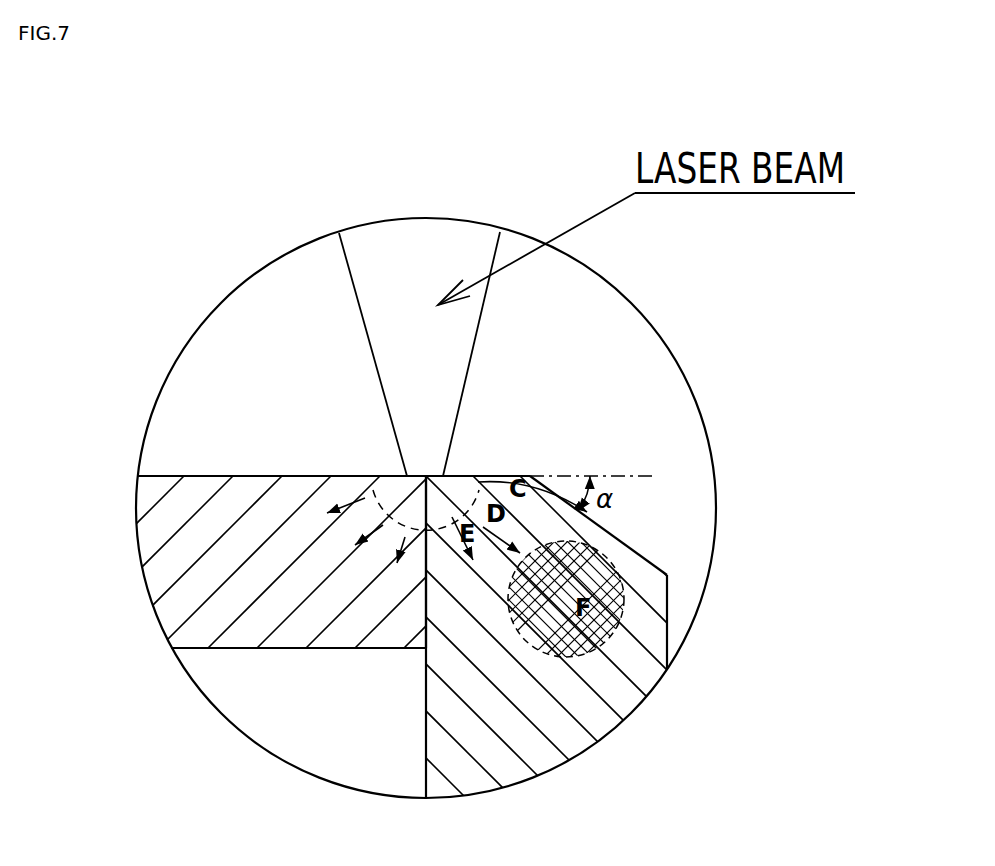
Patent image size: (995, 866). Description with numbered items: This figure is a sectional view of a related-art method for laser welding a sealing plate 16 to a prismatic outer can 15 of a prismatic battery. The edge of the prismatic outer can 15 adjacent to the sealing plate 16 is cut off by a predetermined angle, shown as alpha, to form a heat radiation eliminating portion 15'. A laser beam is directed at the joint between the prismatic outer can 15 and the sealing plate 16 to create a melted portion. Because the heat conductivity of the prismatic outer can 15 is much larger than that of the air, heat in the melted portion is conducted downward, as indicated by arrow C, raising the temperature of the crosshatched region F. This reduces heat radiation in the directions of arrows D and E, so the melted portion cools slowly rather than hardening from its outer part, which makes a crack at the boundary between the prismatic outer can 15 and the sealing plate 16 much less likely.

The prismatic outer can 15 is at (516, 637).
The sealing plate 16 is at (298, 618).
The heat radiation eliminating portion 15' is at (666, 527).